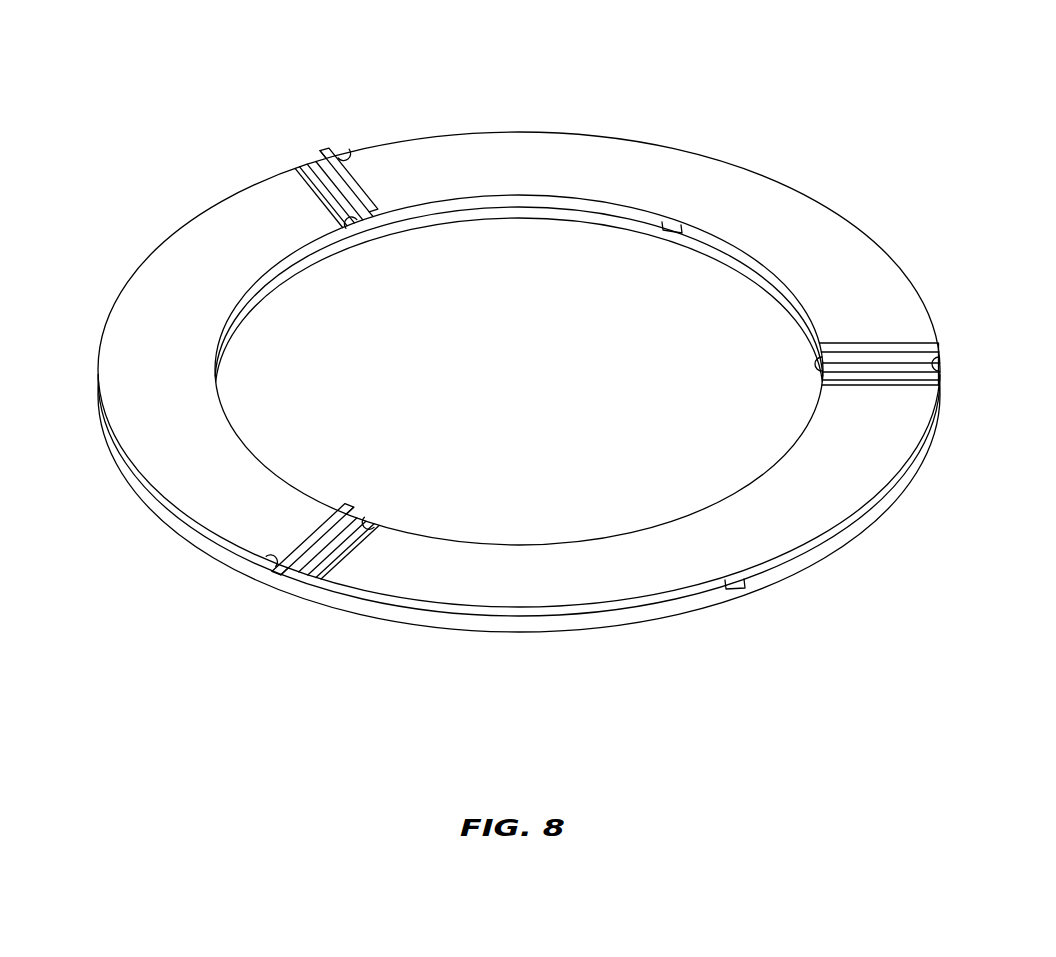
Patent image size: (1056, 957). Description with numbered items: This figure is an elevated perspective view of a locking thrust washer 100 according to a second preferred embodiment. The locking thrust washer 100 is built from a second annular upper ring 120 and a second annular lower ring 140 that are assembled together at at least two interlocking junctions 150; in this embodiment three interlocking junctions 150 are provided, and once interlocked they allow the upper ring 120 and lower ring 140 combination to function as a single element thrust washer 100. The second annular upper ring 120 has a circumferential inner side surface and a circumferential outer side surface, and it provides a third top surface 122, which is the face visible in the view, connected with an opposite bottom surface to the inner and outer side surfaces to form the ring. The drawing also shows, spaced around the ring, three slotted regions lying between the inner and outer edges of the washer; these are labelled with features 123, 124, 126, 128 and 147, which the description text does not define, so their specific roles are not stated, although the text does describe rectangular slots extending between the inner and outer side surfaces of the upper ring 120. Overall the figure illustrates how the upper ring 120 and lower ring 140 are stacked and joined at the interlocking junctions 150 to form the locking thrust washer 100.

The locking thrust washer 100 is at (874, 139).
The second annular upper ring 120 is at (852, 220).
The third top surface 122 is at (848, 267).
The radial slot 123 is at (608, 358).
The slot step 124 is at (313, 158).
The slot edge 126 is at (297, 158).
The slot wall 128 is at (327, 147).
The second annular lower ring 140 is at (868, 518).
The slot end notch 147 is at (364, 185).
The interlocking junction 150 is at (672, 223).